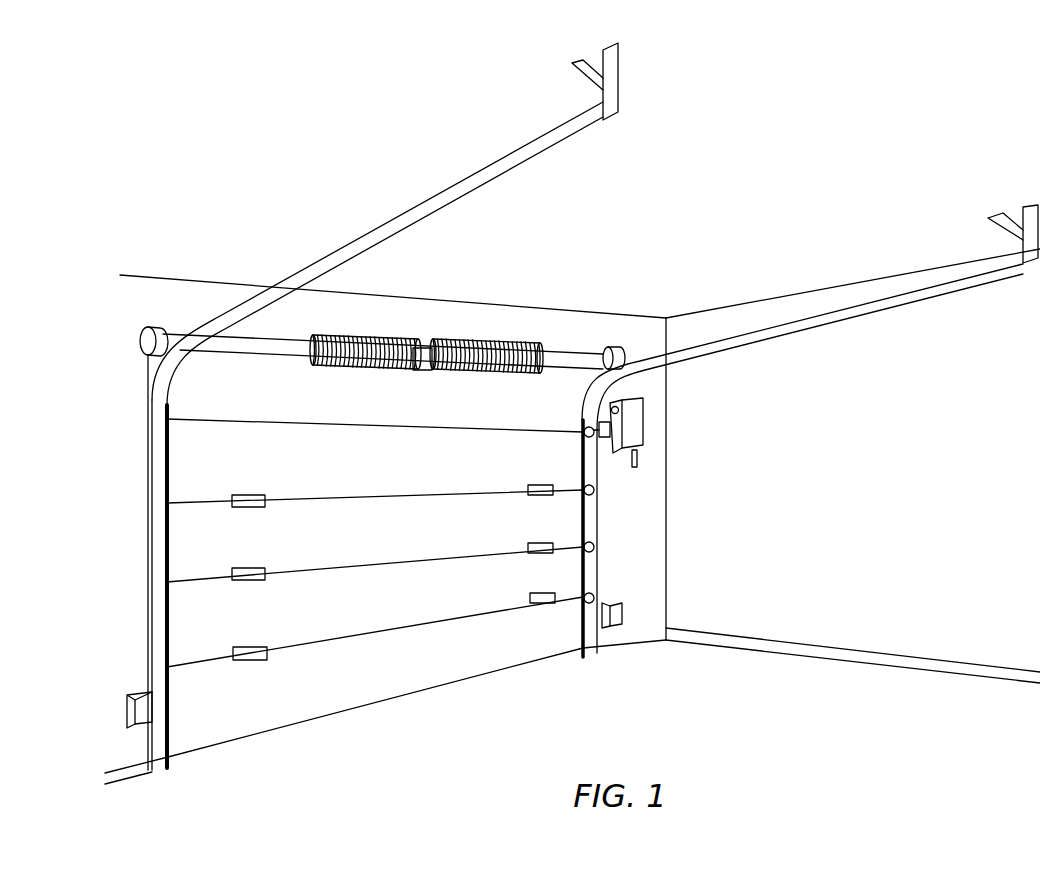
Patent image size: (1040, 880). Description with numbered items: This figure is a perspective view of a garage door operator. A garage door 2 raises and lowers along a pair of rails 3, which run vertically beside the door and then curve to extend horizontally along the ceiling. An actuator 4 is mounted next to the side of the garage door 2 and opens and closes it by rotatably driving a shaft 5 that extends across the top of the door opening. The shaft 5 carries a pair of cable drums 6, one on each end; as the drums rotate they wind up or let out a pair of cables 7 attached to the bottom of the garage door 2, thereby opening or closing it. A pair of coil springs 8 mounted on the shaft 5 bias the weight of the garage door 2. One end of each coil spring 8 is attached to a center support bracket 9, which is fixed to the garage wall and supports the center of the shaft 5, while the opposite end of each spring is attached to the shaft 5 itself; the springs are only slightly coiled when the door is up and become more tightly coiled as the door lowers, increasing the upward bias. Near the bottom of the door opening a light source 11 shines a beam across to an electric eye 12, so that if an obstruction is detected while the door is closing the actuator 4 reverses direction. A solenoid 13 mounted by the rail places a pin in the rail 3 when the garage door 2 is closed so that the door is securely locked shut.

The garage door 2 is at (283, 705).
The rails 3 is at (452, 197).
The actuator 4 is at (643, 430).
The shaft 5 is at (243, 350).
The cable drums 6 is at (140, 341).
The cables 7 is at (148, 553).
The coil springs 8 is at (372, 340).
The center support bracket 9 is at (425, 367).
The light source 11 is at (135, 710).
The electric eye 12 is at (623, 613).
The solenoid 13 is at (606, 440).